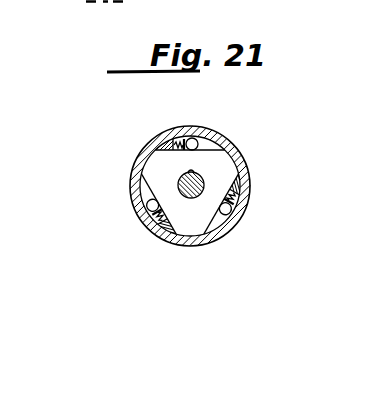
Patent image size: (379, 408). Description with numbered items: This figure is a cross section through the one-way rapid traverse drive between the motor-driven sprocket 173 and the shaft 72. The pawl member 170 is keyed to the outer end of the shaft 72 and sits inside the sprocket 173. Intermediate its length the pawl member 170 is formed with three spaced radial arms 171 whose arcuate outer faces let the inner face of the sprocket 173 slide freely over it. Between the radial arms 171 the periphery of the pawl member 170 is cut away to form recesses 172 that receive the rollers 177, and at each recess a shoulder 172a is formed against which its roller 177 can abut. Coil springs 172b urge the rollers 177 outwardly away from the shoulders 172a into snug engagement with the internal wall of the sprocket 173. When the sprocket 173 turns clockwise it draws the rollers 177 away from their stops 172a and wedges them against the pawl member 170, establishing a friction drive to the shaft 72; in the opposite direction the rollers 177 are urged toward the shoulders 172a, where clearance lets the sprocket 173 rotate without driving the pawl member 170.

The pawl member 170 is at (243, 157).
The radial arms 171 is at (166, 158).
The shaft 72 is at (251, 184).
The recesses 172 is at (222, 134).
The shoulders 172a is at (192, 137).
The coil springs 172b is at (176, 130).
The sprocket 173 is at (141, 163).
The rollers 177 is at (213, 148).